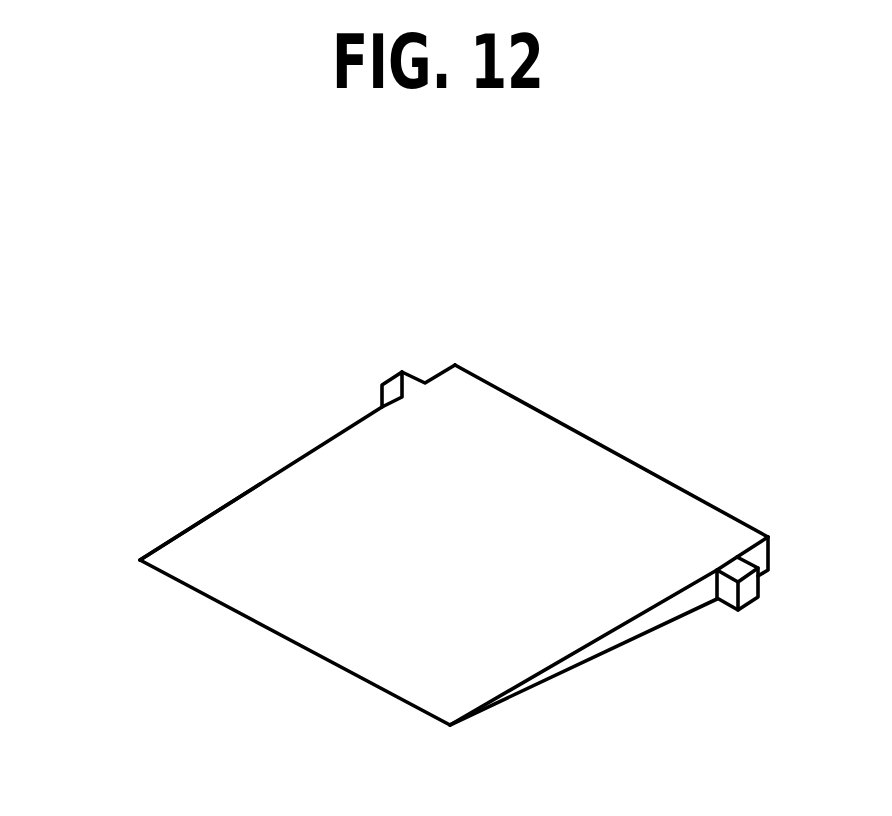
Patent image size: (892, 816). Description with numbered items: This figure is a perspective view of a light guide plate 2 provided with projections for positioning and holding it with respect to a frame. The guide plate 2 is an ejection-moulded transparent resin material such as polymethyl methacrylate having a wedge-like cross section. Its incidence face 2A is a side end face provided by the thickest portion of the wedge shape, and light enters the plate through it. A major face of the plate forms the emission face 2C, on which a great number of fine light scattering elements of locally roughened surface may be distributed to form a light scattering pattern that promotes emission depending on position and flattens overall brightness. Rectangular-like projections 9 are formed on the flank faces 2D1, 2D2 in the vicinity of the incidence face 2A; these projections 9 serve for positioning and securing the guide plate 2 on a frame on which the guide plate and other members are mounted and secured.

The light guide plate 2 is at (178, 565).
The incidence face 2A is at (627, 455).
The emission face 2C is at (448, 403).
The flank face 2D1 is at (647, 620).
The flank face 2D2 is at (193, 527).
The projection 9 is at (402, 385).